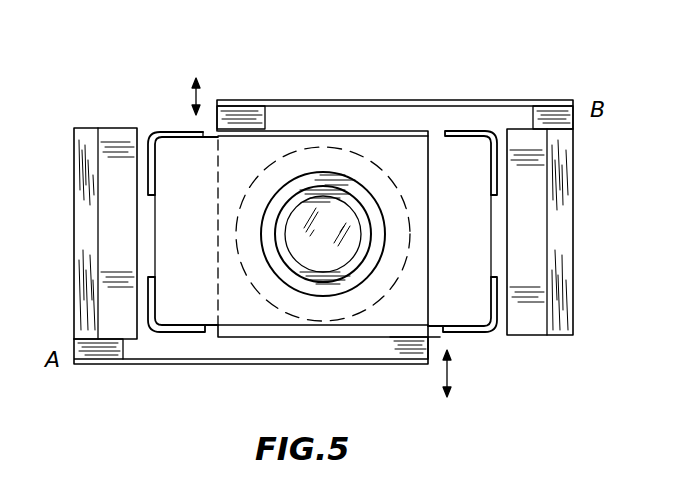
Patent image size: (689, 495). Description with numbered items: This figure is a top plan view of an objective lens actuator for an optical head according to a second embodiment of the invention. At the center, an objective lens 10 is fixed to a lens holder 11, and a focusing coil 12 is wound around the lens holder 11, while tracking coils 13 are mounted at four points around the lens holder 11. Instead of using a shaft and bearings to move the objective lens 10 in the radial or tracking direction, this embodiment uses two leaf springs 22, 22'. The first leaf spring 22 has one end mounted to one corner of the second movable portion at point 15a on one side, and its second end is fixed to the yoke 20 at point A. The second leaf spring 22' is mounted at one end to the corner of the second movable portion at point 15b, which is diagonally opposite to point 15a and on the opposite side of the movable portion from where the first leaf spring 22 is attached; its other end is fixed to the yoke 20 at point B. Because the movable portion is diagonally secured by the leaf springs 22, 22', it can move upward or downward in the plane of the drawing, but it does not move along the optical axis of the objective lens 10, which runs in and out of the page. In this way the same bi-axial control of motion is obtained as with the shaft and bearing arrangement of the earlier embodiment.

The objective lens 10 is at (328, 207).
The lens holder 11 is at (455, 150).
The focusing coil 12 is at (492, 228).
The tracking coils 13 is at (494, 130).
The point 15a is at (440, 337).
The point 15b is at (215, 131).
The yoke 20 is at (80, 239).
The first leaf spring 22 is at (251, 371).
The second leaf spring 22' is at (395, 93).